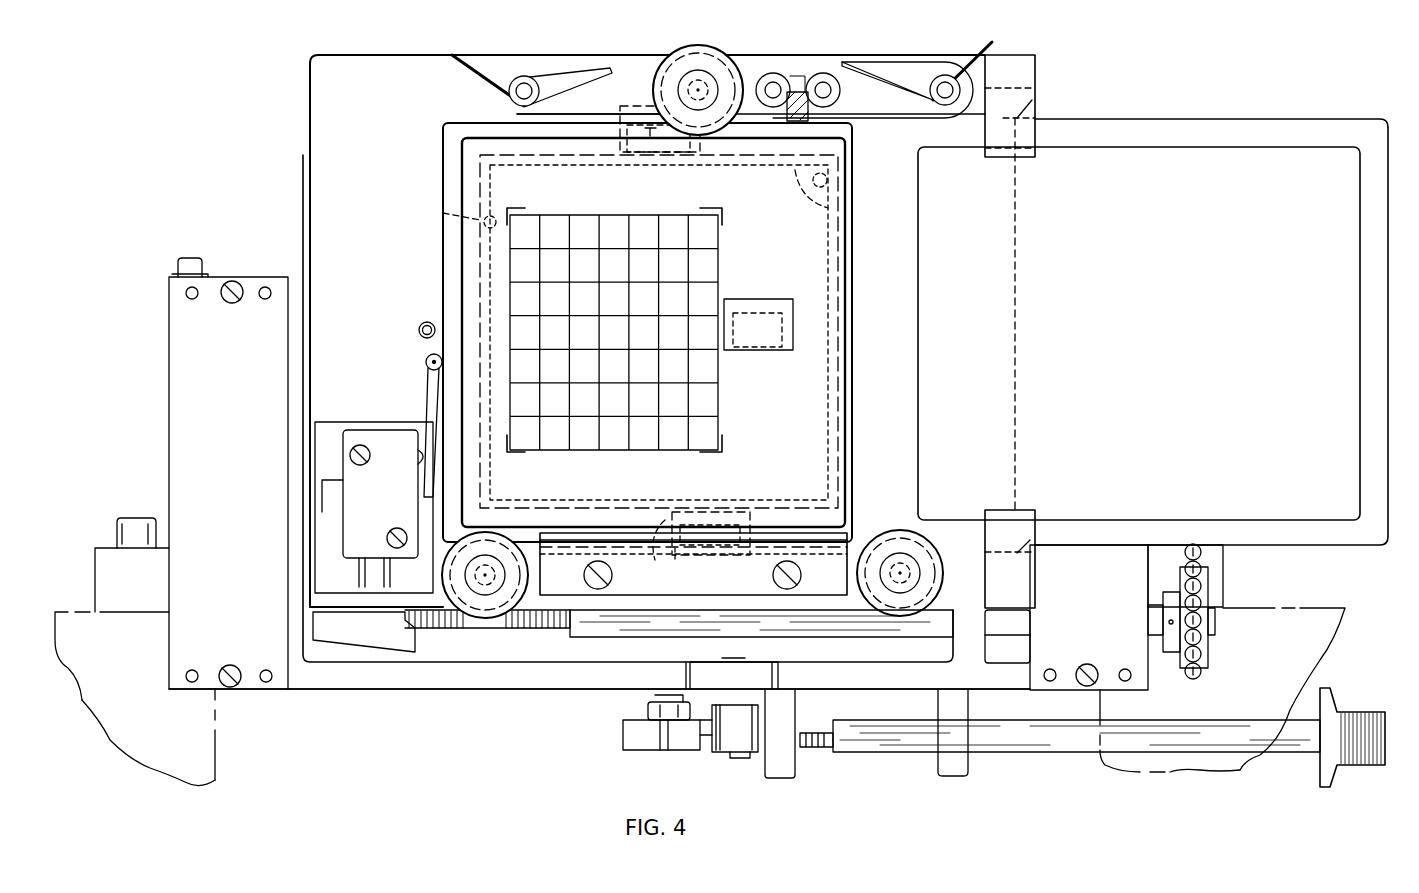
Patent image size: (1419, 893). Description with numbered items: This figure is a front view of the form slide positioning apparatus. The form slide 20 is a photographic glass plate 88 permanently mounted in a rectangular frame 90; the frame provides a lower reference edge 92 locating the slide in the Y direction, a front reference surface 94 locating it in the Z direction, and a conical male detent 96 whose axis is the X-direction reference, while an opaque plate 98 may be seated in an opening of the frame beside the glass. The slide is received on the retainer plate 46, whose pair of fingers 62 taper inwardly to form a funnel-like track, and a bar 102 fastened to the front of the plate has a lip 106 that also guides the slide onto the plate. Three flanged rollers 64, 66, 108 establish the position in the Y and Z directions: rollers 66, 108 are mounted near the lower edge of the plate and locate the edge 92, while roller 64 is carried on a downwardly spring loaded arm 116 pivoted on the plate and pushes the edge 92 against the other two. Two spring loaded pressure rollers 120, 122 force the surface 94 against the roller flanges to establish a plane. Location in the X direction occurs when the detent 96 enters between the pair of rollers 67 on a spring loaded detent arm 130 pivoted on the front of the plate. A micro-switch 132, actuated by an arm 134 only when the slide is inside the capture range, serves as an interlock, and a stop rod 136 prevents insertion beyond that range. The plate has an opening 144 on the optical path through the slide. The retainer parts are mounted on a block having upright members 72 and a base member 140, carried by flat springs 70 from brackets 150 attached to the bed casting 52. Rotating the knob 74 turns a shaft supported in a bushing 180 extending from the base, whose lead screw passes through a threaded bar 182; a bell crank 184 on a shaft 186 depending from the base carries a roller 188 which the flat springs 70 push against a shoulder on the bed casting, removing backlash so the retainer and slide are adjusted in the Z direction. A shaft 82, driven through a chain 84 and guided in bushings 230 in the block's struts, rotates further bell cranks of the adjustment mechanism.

The form slide 20 is at (1153, 308).
The retainer plate 46 is at (398, 52).
The bed casting 52 is at (200, 737).
The fingers 62 is at (1035, 76).
The flanged roller 64 is at (700, 72).
The flanged roller 66 is at (900, 542).
The rollers 67 is at (774, 72).
The flat springs 70 is at (172, 316).
The upright members 72 is at (305, 168).
The knob 74 is at (1340, 712).
The shaft 82 is at (1160, 615).
The chain 84 is at (1200, 552).
The photographic glass plate 88 is at (828, 425).
The rectangular frame 90 is at (1130, 120).
The reference edge 92 is at (1100, 548).
The front reference surface 94 is at (872, 332).
The conical male detent 96 is at (797, 80).
The opaque plate 98 is at (1154, 332).
The bar 102 is at (764, 598).
The lip 106 is at (884, 545).
The flanged roller 108 is at (493, 618).
The spring loaded arm 116 is at (562, 78).
The pressure roller 120 is at (632, 107).
The pressure roller 122 is at (668, 560).
The detent arm 130 is at (905, 70).
The micro-switch 132 is at (398, 440).
The arm 134 is at (426, 360).
The stop rod 136 is at (418, 330).
The base member 140 is at (420, 690).
The opening 144 is at (490, 222).
The brackets 150 is at (118, 555).
The bushing 180 is at (965, 760).
The threaded bar 182 is at (795, 760).
The bell crank 184 is at (622, 740).
The shaft 186 is at (720, 727).
The roller 188 is at (645, 707).
The bushings 230 is at (965, 640).